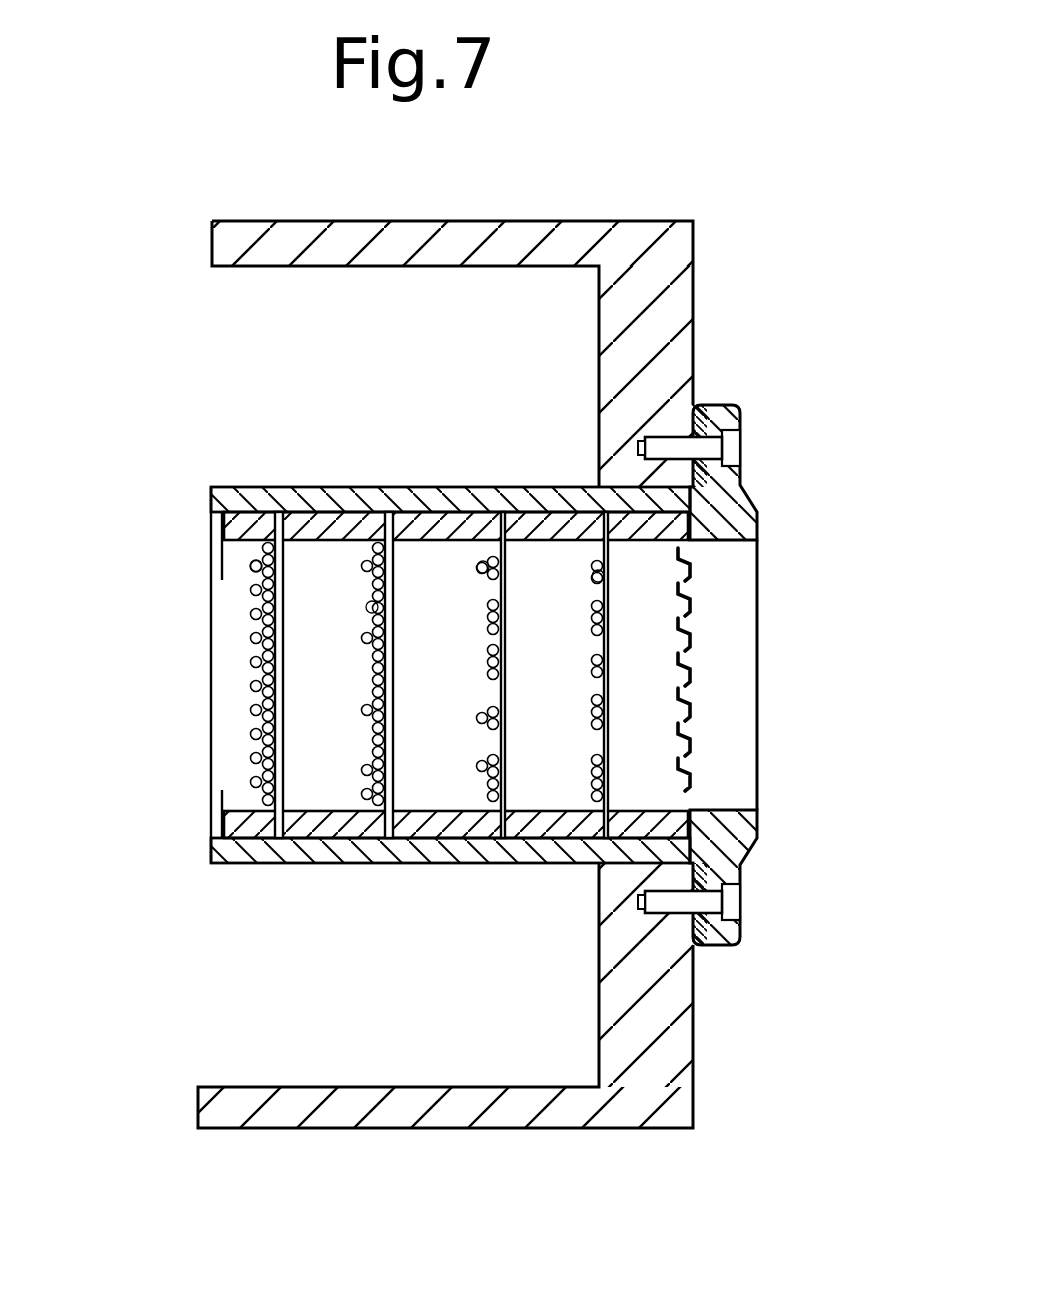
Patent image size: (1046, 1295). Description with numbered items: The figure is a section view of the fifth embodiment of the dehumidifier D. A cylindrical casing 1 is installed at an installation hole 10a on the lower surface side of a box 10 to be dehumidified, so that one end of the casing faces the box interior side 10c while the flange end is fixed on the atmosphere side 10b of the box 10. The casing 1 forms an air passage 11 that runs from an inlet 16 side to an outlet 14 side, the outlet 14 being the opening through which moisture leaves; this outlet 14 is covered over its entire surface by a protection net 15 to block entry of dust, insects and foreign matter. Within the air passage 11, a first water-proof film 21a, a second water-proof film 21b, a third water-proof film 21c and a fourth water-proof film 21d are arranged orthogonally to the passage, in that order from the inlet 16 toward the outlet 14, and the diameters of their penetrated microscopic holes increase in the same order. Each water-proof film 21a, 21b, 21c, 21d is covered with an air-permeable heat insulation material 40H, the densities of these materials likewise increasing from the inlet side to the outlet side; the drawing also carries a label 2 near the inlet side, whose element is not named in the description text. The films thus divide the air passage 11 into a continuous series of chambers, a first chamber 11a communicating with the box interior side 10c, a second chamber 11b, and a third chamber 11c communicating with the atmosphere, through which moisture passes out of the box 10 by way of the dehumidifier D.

The cylindrical casing 1 is at (760, 830).
The coolant/filter beads 2 is at (258, 623).
The box 10 is at (500, 221).
The installation hole 10a is at (600, 487).
The atmosphere side 10b is at (822, 338).
The box interior side 10c is at (404, 338).
The air passage 11 is at (240, 673).
The first chamber 11a is at (352, 709).
The second chamber 11b is at (462, 709).
The third chamber 11c is at (570, 709).
The outlet 14 is at (763, 645).
The protection net 15 is at (690, 742).
The inlet 16 is at (240, 733).
The first water-proof film 21a is at (258, 790).
The second water-proof film 21b is at (378, 756).
The third water-proof film 21c is at (492, 748).
The fourth water-proof film 21d is at (595, 748).
The air-permeable heat insulation material 40H is at (370, 606).
The dehumidifier D is at (768, 490).